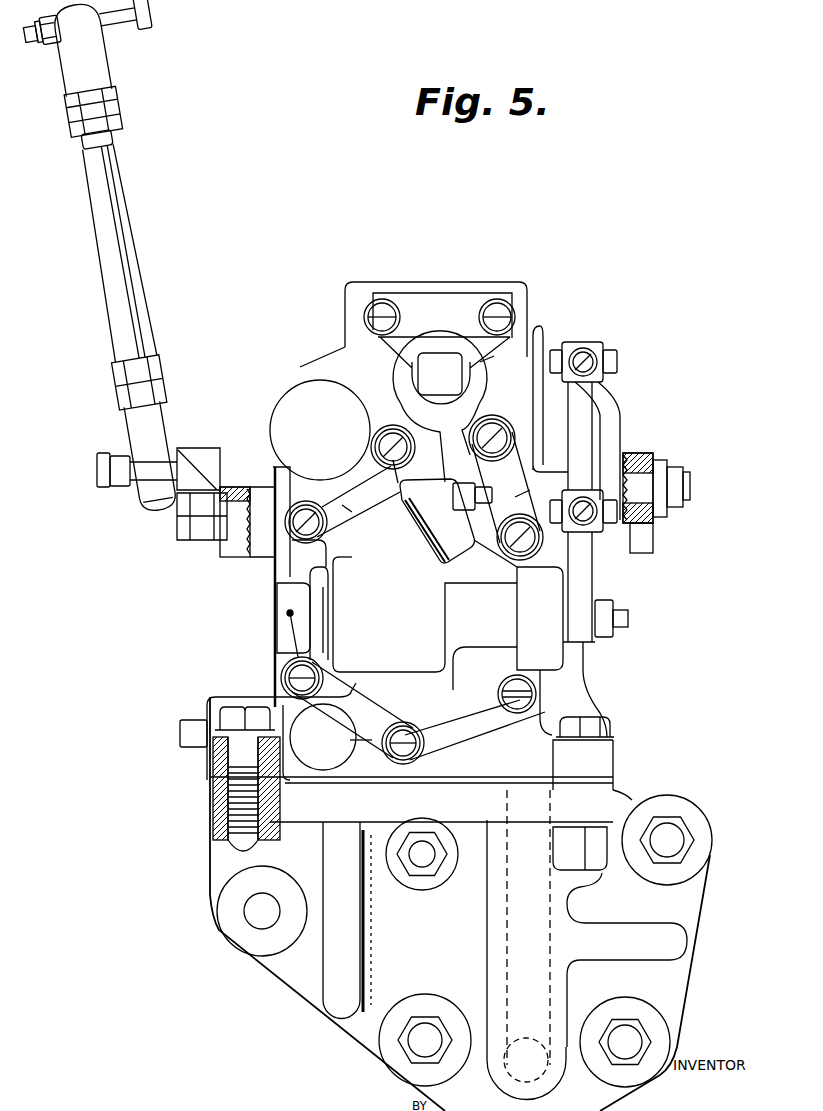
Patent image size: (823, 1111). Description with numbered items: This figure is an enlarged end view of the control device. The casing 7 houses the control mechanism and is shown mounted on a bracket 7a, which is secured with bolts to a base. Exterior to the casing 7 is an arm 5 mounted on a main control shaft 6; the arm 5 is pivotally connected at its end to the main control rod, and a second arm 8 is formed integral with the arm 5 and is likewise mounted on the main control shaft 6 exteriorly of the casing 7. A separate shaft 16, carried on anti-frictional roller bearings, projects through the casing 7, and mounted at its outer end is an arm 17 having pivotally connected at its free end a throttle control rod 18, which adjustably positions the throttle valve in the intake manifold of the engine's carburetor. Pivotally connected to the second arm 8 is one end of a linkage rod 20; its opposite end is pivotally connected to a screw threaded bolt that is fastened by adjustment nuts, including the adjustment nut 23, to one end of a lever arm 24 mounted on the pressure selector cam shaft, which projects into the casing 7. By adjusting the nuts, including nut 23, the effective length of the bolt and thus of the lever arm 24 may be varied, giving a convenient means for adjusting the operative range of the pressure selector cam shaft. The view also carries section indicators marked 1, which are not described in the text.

The steering gear housing 1 is at (425, 1095).
The arm 5 is at (653, 550).
The main control shaft 6 is at (641, 480).
The casing 7 is at (468, 574).
The bracket 7a is at (293, 968).
The second arm 8 is at (607, 407).
The shaft 16 is at (223, 557).
The arm 17 is at (193, 457).
The throttle control rod 18 is at (127, 258).
The linkage rod 20 is at (585, 447).
The adjustment nut 23 is at (615, 560).
The lever arm 24 is at (580, 575).